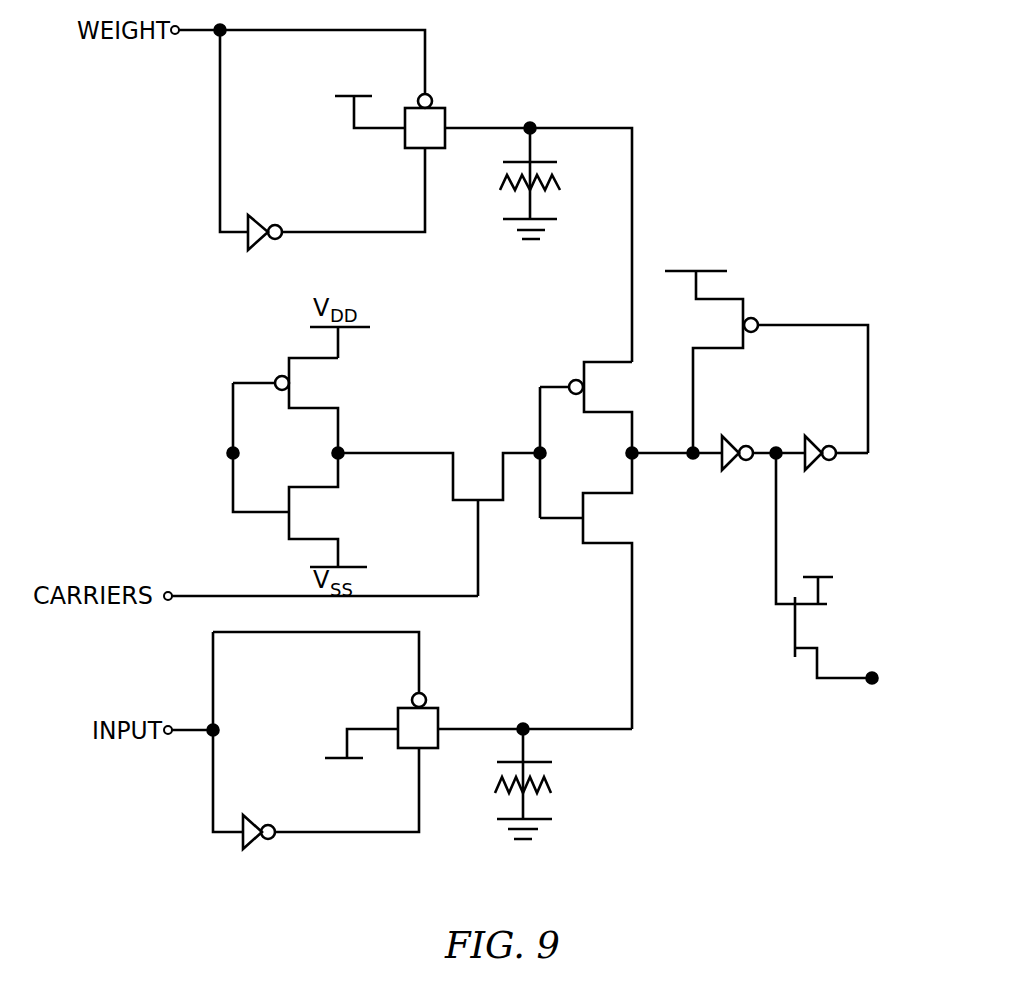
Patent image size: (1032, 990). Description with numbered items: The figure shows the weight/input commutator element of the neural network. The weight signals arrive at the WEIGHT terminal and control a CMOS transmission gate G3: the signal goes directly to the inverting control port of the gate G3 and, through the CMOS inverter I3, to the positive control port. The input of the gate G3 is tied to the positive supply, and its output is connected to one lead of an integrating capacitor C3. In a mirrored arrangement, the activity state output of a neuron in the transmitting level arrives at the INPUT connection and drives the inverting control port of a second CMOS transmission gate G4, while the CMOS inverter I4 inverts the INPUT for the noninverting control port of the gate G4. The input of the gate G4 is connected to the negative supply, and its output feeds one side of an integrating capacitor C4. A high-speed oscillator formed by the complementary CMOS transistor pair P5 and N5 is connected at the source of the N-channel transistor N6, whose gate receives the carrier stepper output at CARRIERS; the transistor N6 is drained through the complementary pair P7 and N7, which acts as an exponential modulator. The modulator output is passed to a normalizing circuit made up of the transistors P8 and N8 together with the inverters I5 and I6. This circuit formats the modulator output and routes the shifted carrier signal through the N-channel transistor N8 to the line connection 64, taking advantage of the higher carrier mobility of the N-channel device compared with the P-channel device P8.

The CMOS inverter I3 is at (257, 245).
The CMOS transmission gate G3 is at (447, 110).
The integrating capacitor C3 is at (545, 161).
The P-channel transistor of complementary CMOS transistor pair P5 is at (341, 359).
The N-channel transistor of complementary CMOS transistor pair N5 is at (341, 539).
The N-channel transistor N6 is at (455, 462).
The P-channel transistor of complementary CMOS transistor pair P7 is at (612, 363).
The N-channel transistor of complementary CMOS transistor pair N7 is at (603, 543).
The P-channel transistor P8 is at (718, 298).
The inverter I5 is at (724, 440).
The inverter I6 is at (807, 440).
The N-channel transistor N8 is at (827, 604).
The line connection 64 is at (843, 679).
The CMOS inverter I4 is at (252, 843).
The CMOS transmission gate G4 is at (434, 750).
The integrating capacitor C4 is at (540, 762).